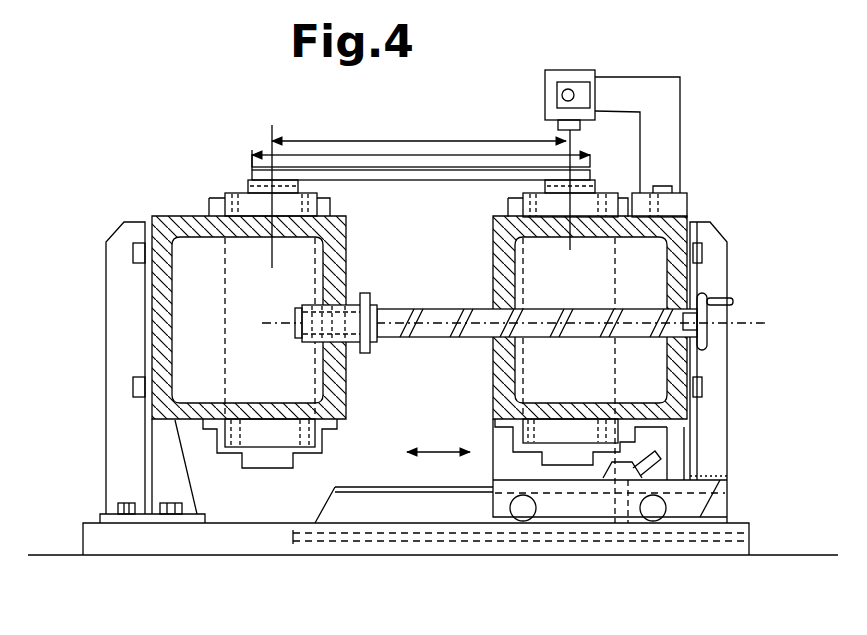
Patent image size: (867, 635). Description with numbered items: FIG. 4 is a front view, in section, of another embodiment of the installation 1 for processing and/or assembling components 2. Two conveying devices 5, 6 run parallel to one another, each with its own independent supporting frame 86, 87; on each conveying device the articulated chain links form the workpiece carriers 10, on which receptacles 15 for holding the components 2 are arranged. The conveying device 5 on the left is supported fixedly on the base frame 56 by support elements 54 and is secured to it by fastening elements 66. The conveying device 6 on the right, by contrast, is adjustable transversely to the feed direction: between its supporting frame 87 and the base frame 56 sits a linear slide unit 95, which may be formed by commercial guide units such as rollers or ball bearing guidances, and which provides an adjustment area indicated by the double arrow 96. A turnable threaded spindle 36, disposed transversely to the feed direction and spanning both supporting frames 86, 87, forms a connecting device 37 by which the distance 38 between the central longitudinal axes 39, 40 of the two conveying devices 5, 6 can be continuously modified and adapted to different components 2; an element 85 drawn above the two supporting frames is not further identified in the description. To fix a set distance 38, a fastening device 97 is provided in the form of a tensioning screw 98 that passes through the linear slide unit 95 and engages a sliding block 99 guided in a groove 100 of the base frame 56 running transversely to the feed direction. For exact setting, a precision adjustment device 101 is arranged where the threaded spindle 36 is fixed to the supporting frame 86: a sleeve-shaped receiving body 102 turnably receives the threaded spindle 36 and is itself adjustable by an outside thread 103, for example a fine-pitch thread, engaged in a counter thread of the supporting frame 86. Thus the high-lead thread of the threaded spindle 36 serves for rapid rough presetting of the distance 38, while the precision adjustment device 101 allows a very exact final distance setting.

The installation 1 is at (80, 170).
The components 2 is at (420, 172).
The conveying device 5 is at (195, 172).
The conveying device 6 is at (608, 145).
The workpiece carriers 10 is at (258, 200).
The receptacles 15 is at (290, 186).
The threaded spindle 36 is at (455, 305).
The connecting device 37 is at (735, 300).
The distance 38 is at (424, 136).
The central longitudinal axis 39 is at (268, 141).
The central longitudinal axis 40 is at (565, 137).
The support elements 54 is at (115, 353).
The base frame 56 is at (122, 543).
The fastening elements 66 is at (128, 502).
The guide rail 85 is at (373, 152).
The supporting frame 86 is at (205, 222).
The supporting frame 87 is at (680, 240).
The linear slide unit 95 is at (710, 462).
The double arrow 96 is at (440, 448).
The fastening device 97 is at (603, 548).
The tensioning screw 98 is at (623, 535).
The sliding block 99 is at (637, 537).
The groove 100 is at (425, 537).
The precision adjustment device 101 is at (353, 368).
The sleeve-shaped receiving body 102 is at (362, 290).
The outside thread 103 is at (338, 302).